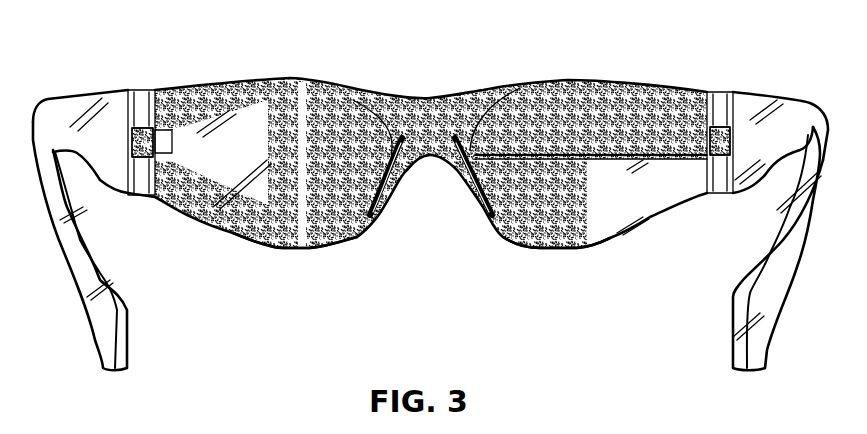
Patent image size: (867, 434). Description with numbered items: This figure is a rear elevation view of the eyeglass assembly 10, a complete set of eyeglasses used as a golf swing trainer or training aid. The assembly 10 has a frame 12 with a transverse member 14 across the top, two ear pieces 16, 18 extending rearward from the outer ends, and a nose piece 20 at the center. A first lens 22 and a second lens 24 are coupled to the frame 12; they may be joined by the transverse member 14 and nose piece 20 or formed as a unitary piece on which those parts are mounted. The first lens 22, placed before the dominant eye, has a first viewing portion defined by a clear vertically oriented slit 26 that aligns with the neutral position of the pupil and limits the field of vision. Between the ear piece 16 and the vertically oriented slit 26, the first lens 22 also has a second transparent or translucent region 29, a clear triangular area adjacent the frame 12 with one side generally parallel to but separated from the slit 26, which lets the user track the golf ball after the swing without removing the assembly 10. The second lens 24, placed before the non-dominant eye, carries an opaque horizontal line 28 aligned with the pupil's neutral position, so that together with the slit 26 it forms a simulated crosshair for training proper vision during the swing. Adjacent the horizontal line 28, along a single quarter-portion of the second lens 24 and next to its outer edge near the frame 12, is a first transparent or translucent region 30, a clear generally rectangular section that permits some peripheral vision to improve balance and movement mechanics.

The eyeglass assembly 10 is at (430, 195).
The frame 12 is at (268, 78).
The transverse member 14 is at (430, 98).
The ear piece 16 is at (127, 320).
The ear piece 18 is at (778, 273).
The nose piece 20 is at (463, 177).
The first lens 22 is at (282, 250).
The second lens 24 is at (570, 250).
The vertically oriented slit 26 is at (303, 85).
The opaque horizontal line 28 is at (677, 158).
The second transparent or translucent region 29 is at (238, 171).
The first transparent or translucent region 30 is at (634, 207).